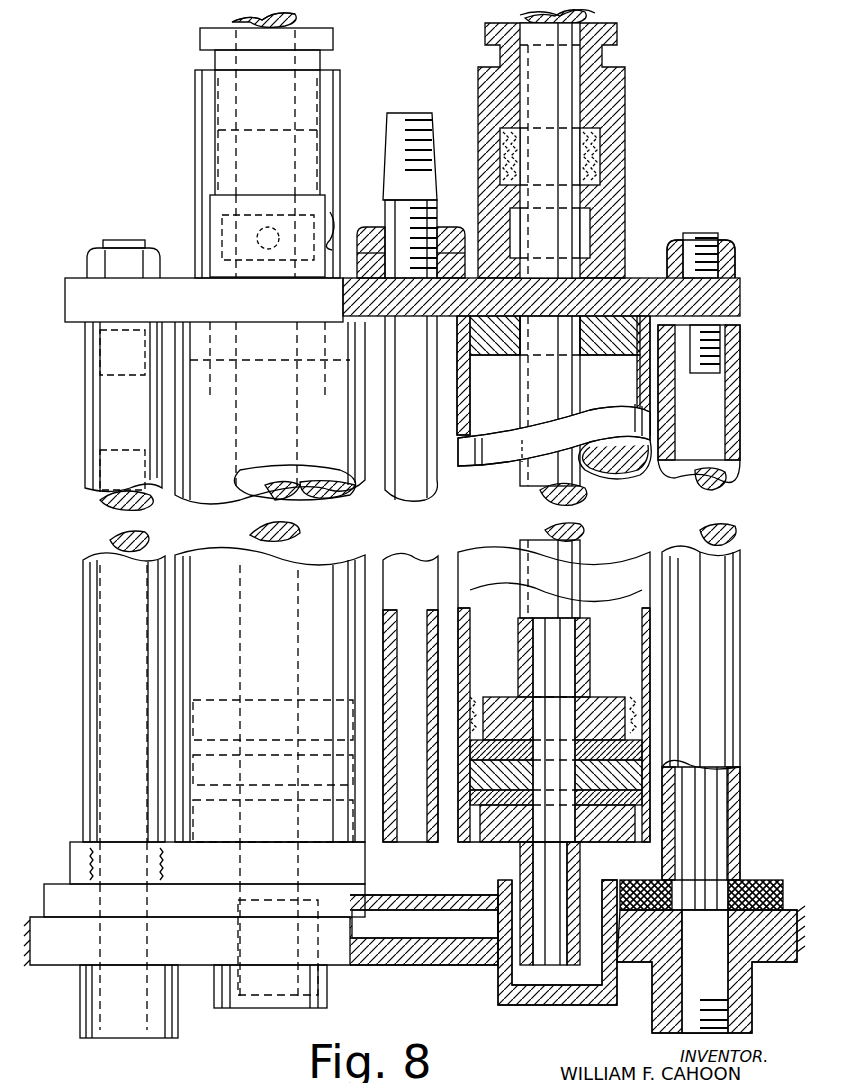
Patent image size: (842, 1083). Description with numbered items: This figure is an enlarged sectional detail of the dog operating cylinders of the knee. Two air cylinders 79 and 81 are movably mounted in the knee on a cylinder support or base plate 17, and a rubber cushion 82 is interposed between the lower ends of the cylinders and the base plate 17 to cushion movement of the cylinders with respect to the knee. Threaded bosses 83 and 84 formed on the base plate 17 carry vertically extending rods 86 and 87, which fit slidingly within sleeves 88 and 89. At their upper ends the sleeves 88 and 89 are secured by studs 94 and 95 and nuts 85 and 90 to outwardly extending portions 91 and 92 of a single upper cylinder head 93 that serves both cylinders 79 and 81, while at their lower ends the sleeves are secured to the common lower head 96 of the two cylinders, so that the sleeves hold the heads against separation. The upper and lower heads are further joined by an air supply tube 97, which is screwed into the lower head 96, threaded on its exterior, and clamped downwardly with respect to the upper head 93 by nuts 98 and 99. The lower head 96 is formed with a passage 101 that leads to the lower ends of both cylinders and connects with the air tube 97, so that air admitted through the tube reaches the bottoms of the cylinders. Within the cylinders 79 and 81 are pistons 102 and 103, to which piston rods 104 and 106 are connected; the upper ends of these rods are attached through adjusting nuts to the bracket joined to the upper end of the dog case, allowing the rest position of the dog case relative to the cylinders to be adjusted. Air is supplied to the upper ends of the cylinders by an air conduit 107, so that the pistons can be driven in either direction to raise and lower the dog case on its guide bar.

The base plate 17 is at (782, 910).
The air cylinder 79 is at (190, 665).
The air cylinder 81 is at (623, 660).
The rubber cushion 82 is at (770, 878).
The threaded boss 83 is at (135, 1028).
The threaded boss 84 is at (752, 1012).
The nut 85 is at (93, 262).
The rod 86 is at (150, 548).
The rod 87 is at (722, 545).
The sleeve 88 is at (105, 656).
The sleeve 89 is at (710, 715).
The nut 90 is at (735, 265).
The outwardly extending portion 91 is at (50, 280).
The outwardly extending portion 92 is at (740, 300).
The upper cylinder head 93 is at (182, 278).
The stud 94 is at (120, 240).
The stud 95 is at (700, 233).
The lower cylinder head 96 is at (255, 852).
The air supply tube 97 is at (425, 185).
The nut 98 is at (368, 232).
The nut 99 is at (460, 250).
The passage 101 is at (405, 897).
The piston 102 is at (275, 700).
The piston 103 is at (615, 712).
The piston rod 104 is at (300, 24).
The piston rod 106 is at (592, 14).
The air conduit 107 is at (328, 222).